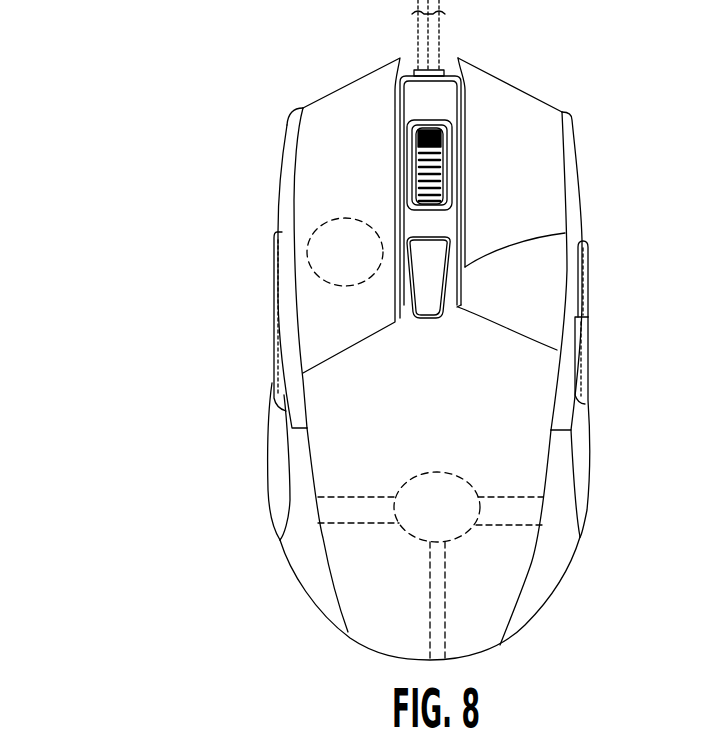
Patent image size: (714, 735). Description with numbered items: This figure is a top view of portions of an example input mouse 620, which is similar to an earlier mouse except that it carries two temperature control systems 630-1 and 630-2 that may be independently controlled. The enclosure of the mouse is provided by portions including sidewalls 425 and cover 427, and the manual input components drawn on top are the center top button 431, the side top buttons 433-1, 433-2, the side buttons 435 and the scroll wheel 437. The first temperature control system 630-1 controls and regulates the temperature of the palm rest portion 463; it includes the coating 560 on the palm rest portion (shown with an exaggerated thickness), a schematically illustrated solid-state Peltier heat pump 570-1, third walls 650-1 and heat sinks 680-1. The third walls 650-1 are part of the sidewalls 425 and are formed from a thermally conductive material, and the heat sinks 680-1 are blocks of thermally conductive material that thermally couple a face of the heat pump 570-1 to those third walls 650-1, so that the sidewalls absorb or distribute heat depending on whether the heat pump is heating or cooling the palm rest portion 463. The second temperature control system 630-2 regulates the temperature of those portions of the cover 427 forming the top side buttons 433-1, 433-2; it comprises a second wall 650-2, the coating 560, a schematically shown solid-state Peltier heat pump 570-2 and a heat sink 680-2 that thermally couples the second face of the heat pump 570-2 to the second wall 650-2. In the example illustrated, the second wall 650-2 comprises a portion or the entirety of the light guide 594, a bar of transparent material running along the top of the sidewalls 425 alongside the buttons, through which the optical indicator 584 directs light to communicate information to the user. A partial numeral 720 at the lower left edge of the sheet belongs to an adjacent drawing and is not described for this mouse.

The input mouse 620 is at (86, 204).
The optical indicator 584 is at (280, 123).
The side top button 433-1 is at (336, 110).
The side top button 433-2 is at (533, 122).
The scroll wheel 437 is at (443, 143).
The light guide 594 is at (283, 140).
The second wall 650-2 is at (278, 168).
The temperature control system 630-2 is at (312, 216).
The heat sink 680-2 is at (304, 250).
The solid-state Peltier heat pump 570-2 is at (310, 260).
The coating 560 is at (312, 284).
The side buttons 435 is at (276, 380).
The sidewalls 425 is at (272, 422).
The third walls 650-1 is at (268, 482).
The center top button 431 is at (563, 234).
The cover 427 is at (540, 402).
The temperature control system 630-1 is at (473, 475).
The palm rest portion 463 is at (512, 480).
The heat sinks 680-1 is at (348, 515).
The heat pump 570-1 is at (463, 540).
The adjacent figure numeral (partial) 720 is at (40, 734).